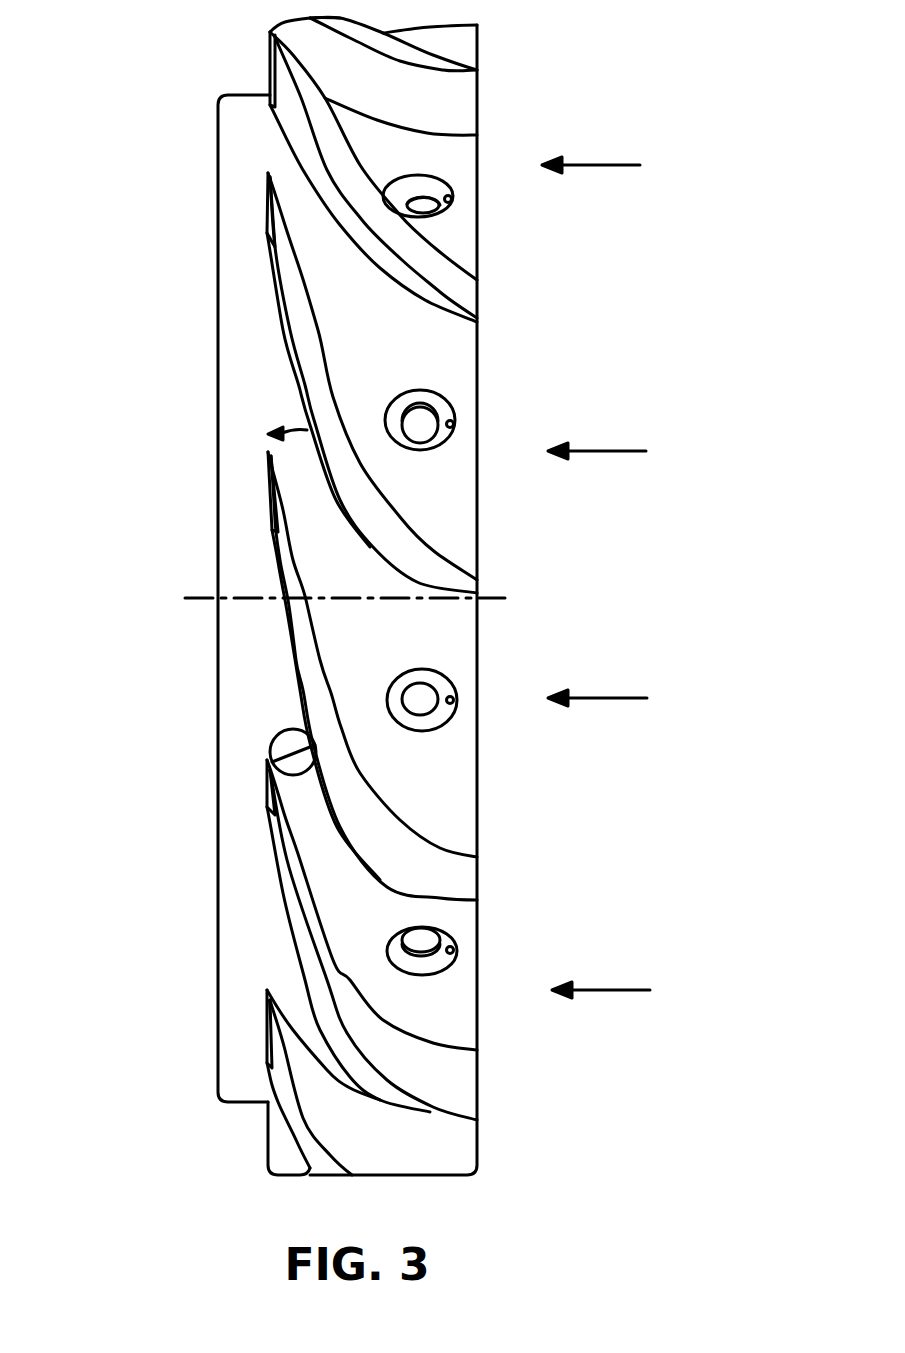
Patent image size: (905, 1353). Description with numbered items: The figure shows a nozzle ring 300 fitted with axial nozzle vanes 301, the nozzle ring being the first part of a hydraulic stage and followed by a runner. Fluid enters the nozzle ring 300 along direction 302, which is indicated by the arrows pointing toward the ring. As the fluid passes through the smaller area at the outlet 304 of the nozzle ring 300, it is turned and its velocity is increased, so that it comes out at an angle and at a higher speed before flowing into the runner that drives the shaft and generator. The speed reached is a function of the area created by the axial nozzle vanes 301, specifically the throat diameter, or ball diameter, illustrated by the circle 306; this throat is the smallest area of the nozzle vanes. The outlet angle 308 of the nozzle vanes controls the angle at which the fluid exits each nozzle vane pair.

The nozzle ring 300 is at (113, 200).
The axial nozzle vanes 301 is at (478, 303).
The direction 302 is at (630, 442).
The outlet 304 is at (290, 467).
The circle 306 is at (272, 738).
The outlet angle 308 is at (293, 423).